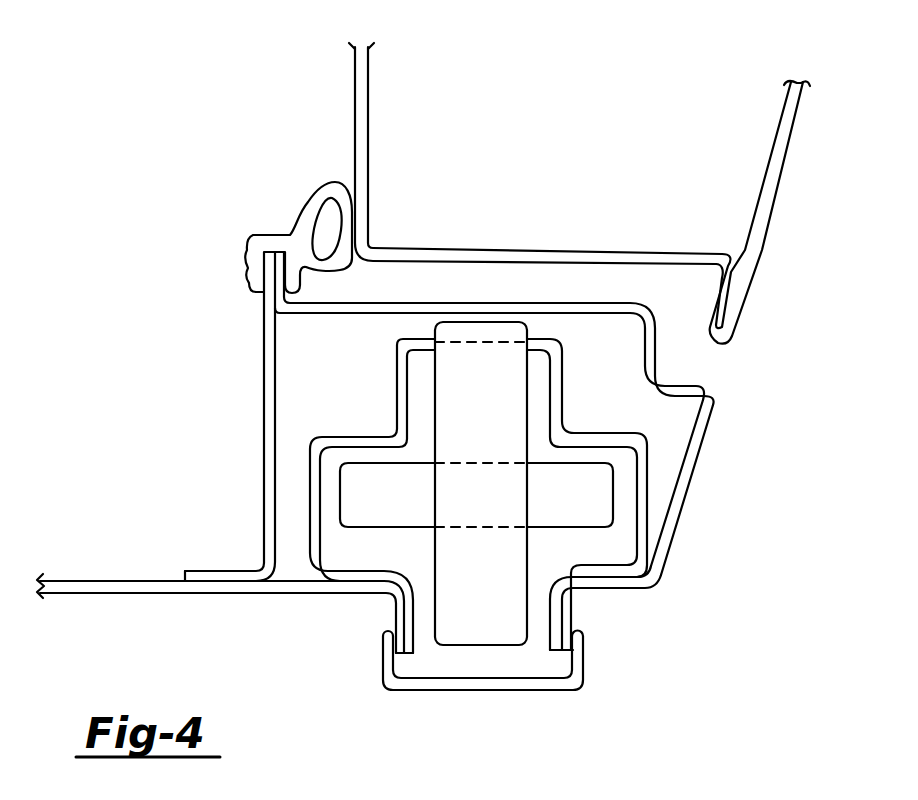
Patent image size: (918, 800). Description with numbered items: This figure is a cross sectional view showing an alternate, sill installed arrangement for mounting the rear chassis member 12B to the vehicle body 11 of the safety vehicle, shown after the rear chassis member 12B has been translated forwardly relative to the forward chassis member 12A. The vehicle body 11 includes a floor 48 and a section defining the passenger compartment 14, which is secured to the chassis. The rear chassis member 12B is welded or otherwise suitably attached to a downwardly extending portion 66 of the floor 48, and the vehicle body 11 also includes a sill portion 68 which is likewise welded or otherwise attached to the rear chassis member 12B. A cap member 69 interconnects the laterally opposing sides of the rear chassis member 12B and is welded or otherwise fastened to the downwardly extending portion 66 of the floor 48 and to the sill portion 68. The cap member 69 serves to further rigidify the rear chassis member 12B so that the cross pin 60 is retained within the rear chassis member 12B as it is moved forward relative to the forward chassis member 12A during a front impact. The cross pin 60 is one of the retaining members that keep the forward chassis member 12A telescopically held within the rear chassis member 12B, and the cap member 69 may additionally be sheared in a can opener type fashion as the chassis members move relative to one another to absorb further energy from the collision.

The vehicle body 11 is at (73, 570).
The forward chassis member 12A is at (530, 547).
The rear chassis member 12B is at (578, 412).
The passenger compartment 14 is at (785, 143).
The floor 48 is at (133, 592).
The cross pin 60 is at (371, 463).
The downwardly extending portion 66 is at (390, 620).
The sill portion 68 is at (693, 468).
The cap member 69 is at (550, 691).